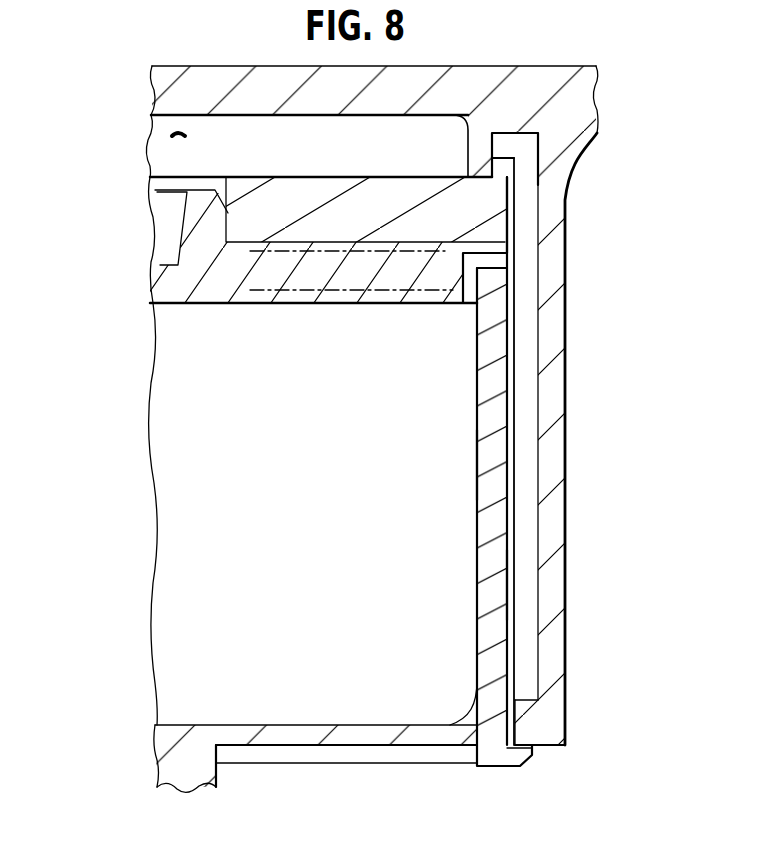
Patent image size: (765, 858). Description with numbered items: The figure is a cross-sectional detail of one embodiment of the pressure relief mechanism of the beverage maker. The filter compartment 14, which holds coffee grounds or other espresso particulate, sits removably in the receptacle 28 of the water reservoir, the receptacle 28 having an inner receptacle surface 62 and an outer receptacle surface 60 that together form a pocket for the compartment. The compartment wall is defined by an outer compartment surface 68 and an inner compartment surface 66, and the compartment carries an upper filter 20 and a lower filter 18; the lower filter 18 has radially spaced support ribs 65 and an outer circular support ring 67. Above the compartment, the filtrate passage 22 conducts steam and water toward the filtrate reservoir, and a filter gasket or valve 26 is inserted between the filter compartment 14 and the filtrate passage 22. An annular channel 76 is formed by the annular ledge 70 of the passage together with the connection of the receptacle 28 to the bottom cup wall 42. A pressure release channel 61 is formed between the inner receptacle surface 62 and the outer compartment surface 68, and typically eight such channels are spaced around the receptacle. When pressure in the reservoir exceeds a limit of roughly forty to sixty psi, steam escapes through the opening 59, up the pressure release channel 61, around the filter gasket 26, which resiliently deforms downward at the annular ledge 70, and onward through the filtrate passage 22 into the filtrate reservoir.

The filter compartment 14 is at (190, 463).
The lower filter 18 is at (155, 745).
The upper filter 20 is at (175, 280).
The filtrate passage 22 is at (170, 133).
The filter gasket or valve 26 is at (453, 212).
The receptacle 28 is at (550, 635).
The bottom cup wall 42 is at (563, 66).
The opening 59 is at (528, 723).
The outer receptacle surface 60 is at (567, 357).
The pressure release channel 61 is at (528, 270).
The inner receptacle surface 62 is at (540, 364).
The support ribs 65 is at (328, 763).
The inner compartment surface 66 is at (480, 447).
The outer circular support ring 67 is at (512, 768).
The outer compartment surface 68 is at (505, 583).
The annular ledge 70 is at (478, 158).
The annular channel 76 is at (507, 165).